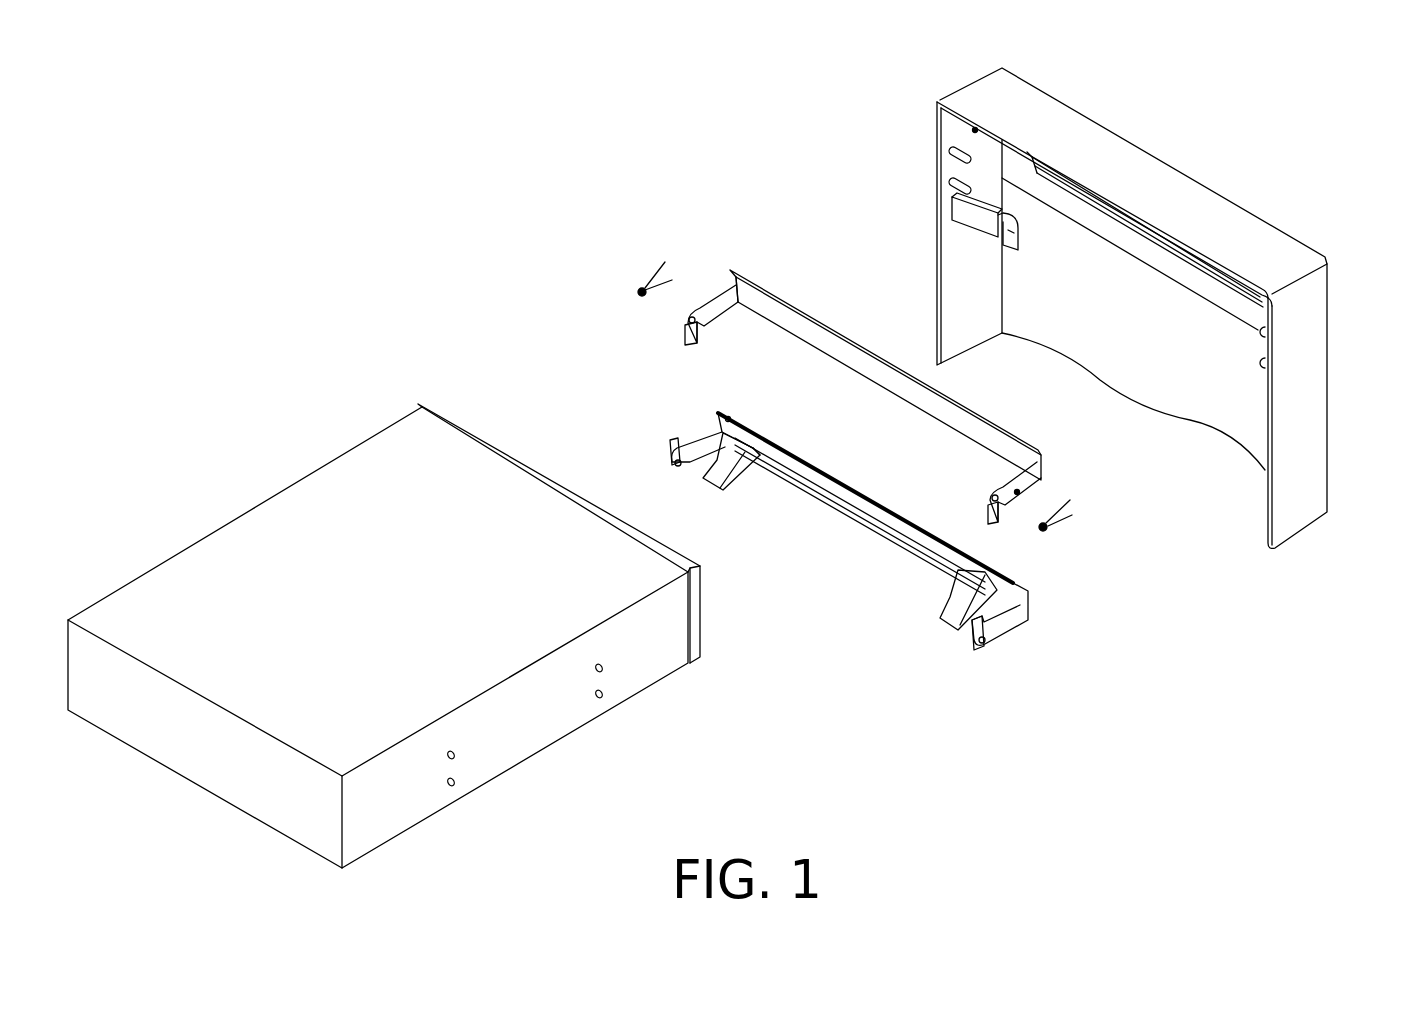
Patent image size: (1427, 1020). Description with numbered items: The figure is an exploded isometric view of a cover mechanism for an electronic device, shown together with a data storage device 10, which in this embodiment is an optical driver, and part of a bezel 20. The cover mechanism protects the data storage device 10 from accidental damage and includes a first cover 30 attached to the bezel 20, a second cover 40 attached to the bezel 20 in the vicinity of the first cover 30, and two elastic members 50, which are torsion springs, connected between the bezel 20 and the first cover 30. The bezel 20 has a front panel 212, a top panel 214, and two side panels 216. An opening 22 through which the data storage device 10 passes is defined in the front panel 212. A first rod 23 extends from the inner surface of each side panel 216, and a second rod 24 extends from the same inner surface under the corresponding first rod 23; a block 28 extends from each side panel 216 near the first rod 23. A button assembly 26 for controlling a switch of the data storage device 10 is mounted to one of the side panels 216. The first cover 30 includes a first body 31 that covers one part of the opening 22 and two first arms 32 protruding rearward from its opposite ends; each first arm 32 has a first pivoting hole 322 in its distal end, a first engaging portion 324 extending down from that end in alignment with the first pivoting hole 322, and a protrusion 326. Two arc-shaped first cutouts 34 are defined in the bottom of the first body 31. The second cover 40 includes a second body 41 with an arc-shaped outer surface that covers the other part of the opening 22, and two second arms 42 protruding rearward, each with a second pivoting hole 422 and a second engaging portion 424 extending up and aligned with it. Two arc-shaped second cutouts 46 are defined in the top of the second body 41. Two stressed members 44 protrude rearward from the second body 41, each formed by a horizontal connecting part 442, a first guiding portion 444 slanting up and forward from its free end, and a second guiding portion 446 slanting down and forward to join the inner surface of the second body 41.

The data storage device 10 is at (281, 474).
The bezel 20 is at (1127, 308).
The opening 22 is at (1093, 185).
The first rod 23 is at (950, 149).
The second rod 24 is at (950, 179).
The button assembly 26 is at (958, 212).
The block 28 is at (968, 128).
The front panel 212 is at (1242, 410).
The top panel 214 is at (1222, 220).
The side panel 216 is at (958, 303).
The first cover 30 is at (844, 363).
The first body 31 is at (968, 430).
The first arm 32 is at (648, 288).
The first pivoting hole 322 is at (685, 321).
The first engaging portion 324 is at (686, 341).
The protrusion 326 is at (1020, 492).
The first cutout 34 is at (742, 303).
The second cover 40 is at (804, 512).
The second body 41 is at (850, 505).
The second arm 42 is at (652, 435).
The second pivoting hole 422 is at (676, 464).
The second engaging portion 424 is at (670, 448).
The stressed member 44 is at (945, 598).
The connecting part 442 is at (746, 480).
The first guiding portion 444 is at (710, 481).
The second guiding portion 446 is at (752, 440).
The second cutout 46 is at (731, 420).
The elastic member 50 is at (1064, 543).